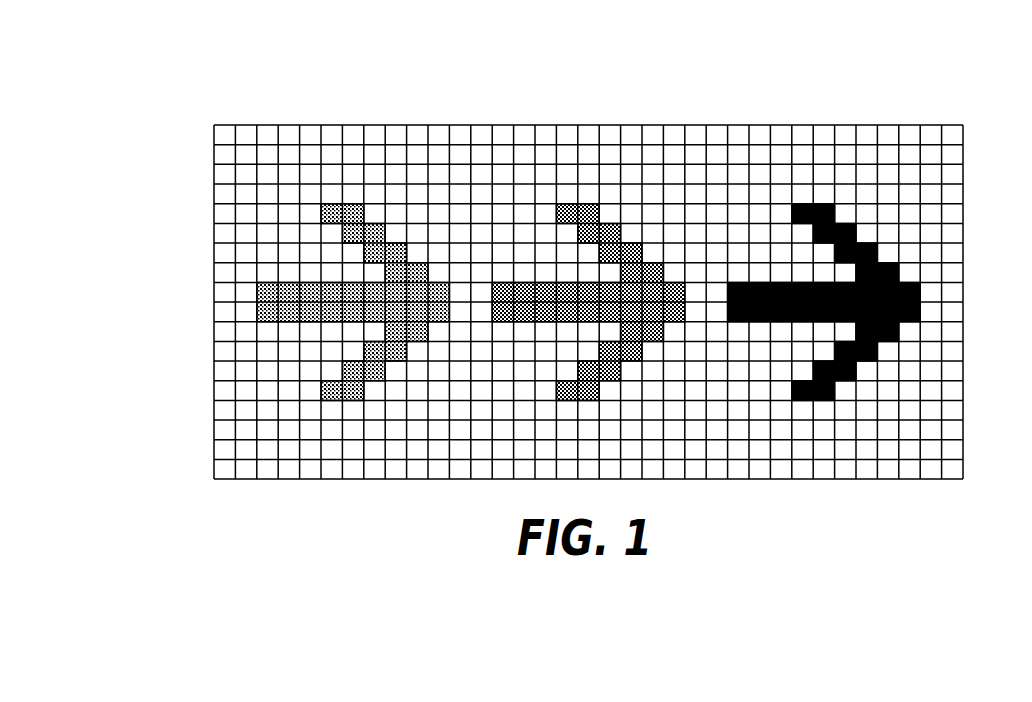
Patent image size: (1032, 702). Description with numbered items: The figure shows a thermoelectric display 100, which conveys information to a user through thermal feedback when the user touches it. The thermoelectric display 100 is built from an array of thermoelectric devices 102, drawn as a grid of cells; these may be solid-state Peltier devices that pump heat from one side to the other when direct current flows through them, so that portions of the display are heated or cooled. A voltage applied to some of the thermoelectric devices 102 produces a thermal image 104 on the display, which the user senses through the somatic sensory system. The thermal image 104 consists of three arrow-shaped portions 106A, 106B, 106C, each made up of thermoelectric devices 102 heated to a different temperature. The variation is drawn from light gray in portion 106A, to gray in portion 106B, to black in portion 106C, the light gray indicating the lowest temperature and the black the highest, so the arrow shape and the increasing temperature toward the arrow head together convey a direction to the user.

The thermoelectric display 100 is at (902, 88).
The thermoelectric devices 102 is at (221, 135).
The thermal image 104 is at (908, 233).
The first portion of the thermal image 106A is at (330, 203).
The second portion of the thermal image 106B is at (565, 203).
The third portion of the thermal image 106C is at (800, 203).